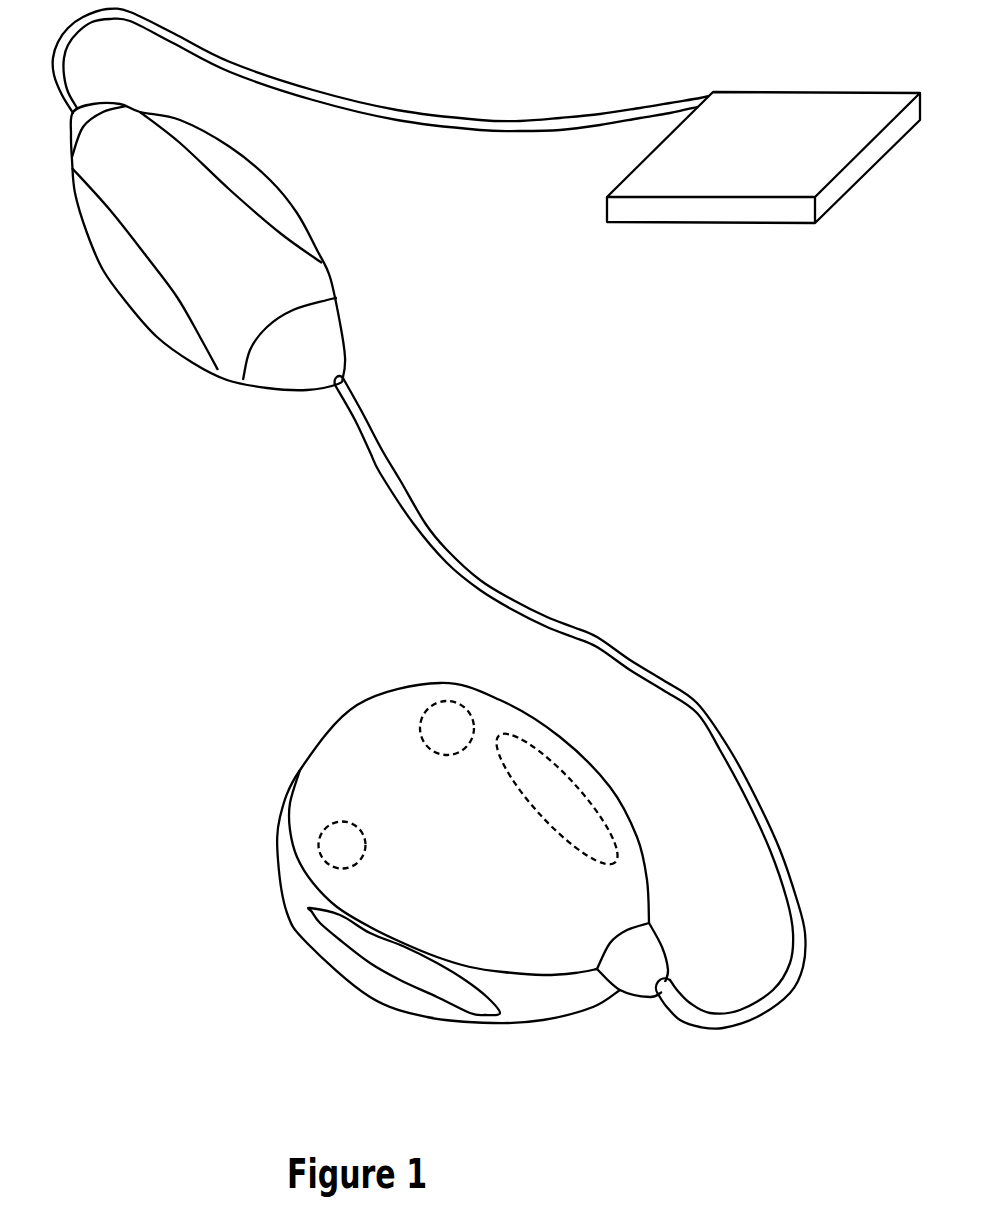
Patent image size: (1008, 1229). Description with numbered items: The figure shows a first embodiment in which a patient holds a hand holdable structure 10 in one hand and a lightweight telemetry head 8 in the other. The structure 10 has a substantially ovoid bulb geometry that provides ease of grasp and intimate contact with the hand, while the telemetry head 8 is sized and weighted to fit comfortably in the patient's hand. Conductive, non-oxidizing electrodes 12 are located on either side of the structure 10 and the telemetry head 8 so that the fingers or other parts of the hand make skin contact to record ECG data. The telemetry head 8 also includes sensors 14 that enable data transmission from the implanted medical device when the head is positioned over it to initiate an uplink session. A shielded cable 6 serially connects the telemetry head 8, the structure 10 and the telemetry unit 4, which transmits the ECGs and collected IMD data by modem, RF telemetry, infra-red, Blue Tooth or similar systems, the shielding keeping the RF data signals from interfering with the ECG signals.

The telemetry unit 4 is at (677, 227).
The cable 6 is at (500, 140).
The telemetry head 8 is at (275, 858).
The structure 10 is at (228, 377).
The electrodes 12 is at (285, 220).
The sensors 14 is at (318, 812).